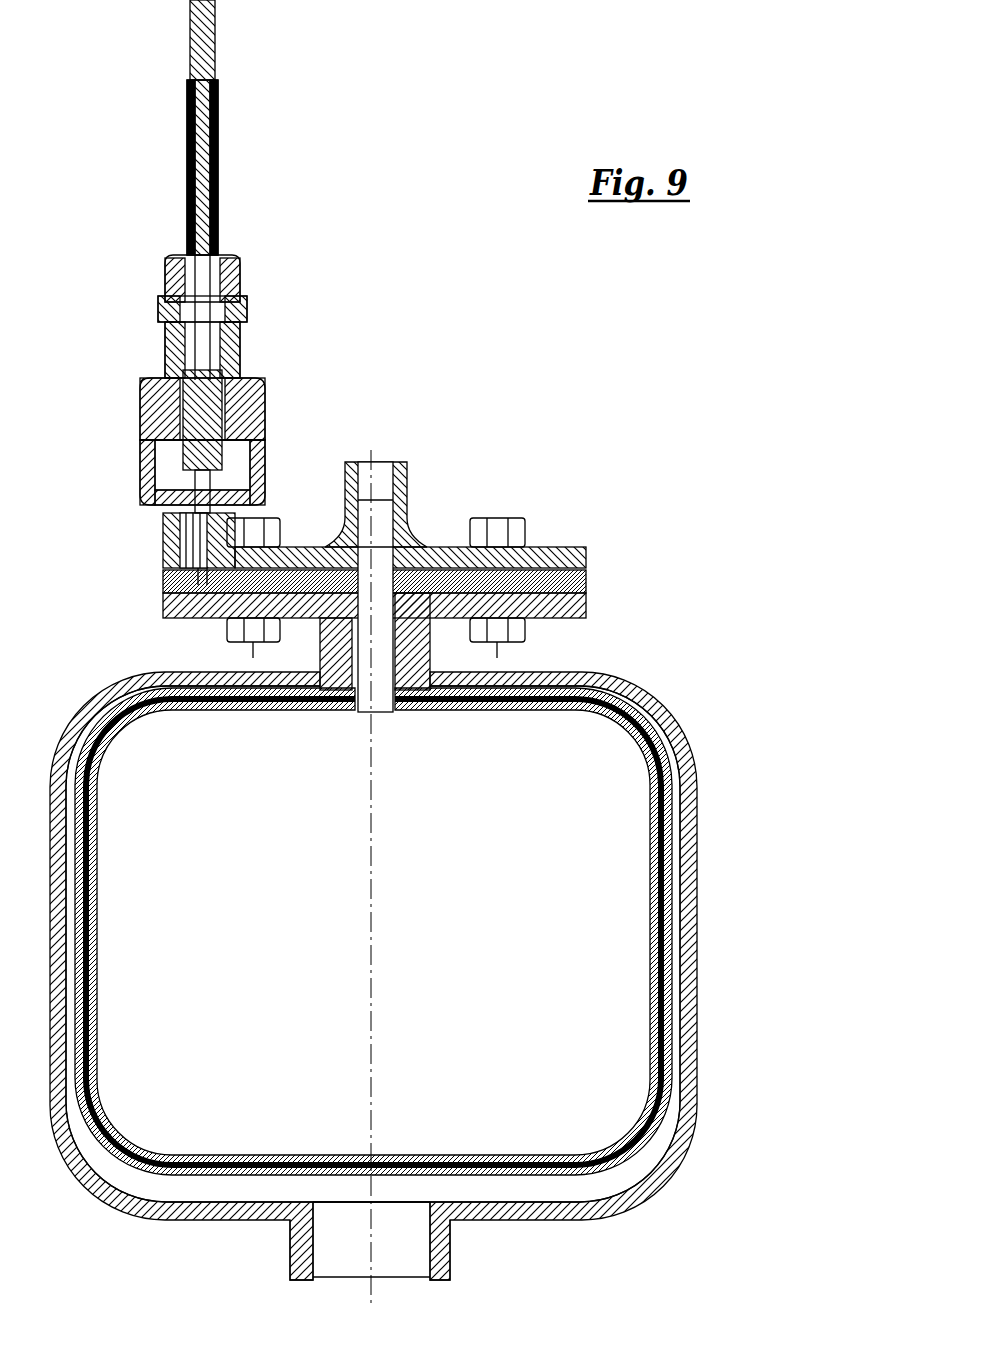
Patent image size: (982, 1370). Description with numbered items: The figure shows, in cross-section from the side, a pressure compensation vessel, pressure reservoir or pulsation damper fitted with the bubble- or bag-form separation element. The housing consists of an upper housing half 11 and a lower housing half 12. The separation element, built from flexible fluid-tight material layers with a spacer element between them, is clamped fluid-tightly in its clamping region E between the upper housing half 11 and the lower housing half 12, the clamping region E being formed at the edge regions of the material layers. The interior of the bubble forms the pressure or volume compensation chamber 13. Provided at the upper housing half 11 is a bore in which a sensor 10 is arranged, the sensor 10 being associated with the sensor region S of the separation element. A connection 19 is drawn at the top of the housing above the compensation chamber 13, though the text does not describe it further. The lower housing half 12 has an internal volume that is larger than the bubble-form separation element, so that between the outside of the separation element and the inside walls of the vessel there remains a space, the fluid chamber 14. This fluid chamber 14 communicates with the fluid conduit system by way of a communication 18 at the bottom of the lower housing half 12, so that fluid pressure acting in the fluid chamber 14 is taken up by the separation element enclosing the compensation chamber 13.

The sensor 10 is at (278, 407).
The upper housing half 11 is at (568, 548).
The lower housing half 12 is at (650, 698).
The pressure or volume compensation chamber 13 is at (607, 863).
The fluid chamber 14 is at (648, 1113).
The communication 18 is at (408, 1250).
The inlet connection boss 19 is at (383, 484).
The clamping region E is at (483, 582).
The sensor region S is at (153, 583).